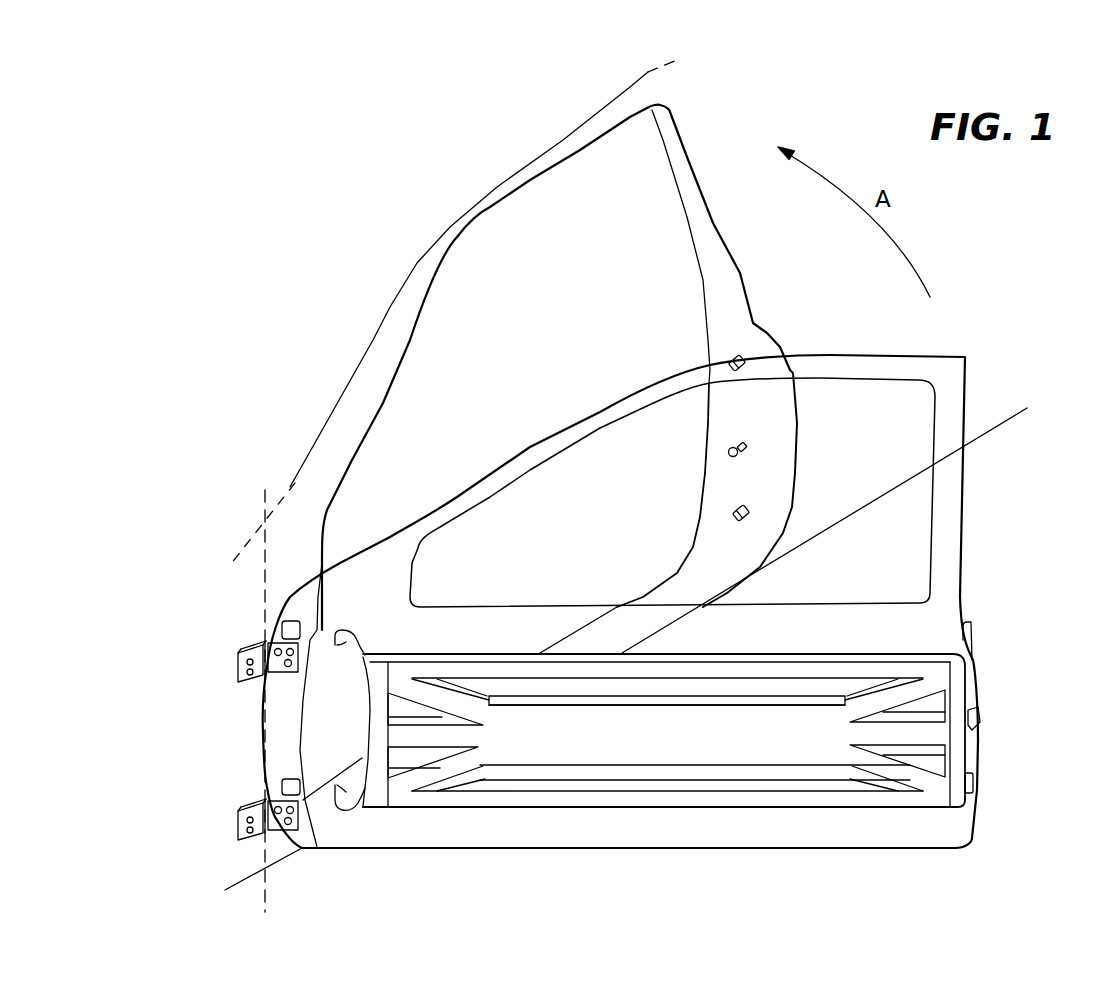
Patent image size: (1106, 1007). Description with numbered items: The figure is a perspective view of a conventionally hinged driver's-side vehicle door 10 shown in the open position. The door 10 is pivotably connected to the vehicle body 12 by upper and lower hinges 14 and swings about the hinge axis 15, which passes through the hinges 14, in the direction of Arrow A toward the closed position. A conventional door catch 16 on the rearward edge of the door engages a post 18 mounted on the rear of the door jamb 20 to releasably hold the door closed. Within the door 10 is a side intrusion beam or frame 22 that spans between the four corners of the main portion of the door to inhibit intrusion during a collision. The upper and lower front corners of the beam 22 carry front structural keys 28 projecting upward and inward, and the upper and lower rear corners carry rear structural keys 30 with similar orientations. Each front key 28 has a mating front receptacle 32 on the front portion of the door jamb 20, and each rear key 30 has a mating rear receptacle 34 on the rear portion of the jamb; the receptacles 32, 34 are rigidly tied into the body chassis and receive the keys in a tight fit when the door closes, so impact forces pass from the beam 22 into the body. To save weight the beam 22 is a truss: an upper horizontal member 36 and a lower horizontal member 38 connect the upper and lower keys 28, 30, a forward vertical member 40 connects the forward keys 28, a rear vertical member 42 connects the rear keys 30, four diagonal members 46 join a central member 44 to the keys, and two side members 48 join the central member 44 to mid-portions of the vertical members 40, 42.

The door 10 is at (1008, 584).
The vehicle body 12 is at (740, 262).
The hinges 14 is at (240, 665).
The axis 15 is at (260, 517).
The door catch 16 is at (982, 730).
The post 18 is at (740, 458).
The door jamb 20 is at (352, 458).
The side intrusion beam 22 is at (432, 840).
The front structural keys 28 is at (340, 626).
The rear structural keys 30 is at (972, 632).
The front receptacle 32 is at (283, 625).
The rear receptacle 34 is at (730, 358).
The upper horizontal member 36 is at (718, 667).
The lower horizontal member 38 is at (663, 798).
The forward vertical member 40 is at (382, 715).
The rear vertical member 42 is at (958, 677).
The central member 44 is at (696, 744).
The diagonal members 46 is at (472, 762).
The side members 48 is at (398, 738).